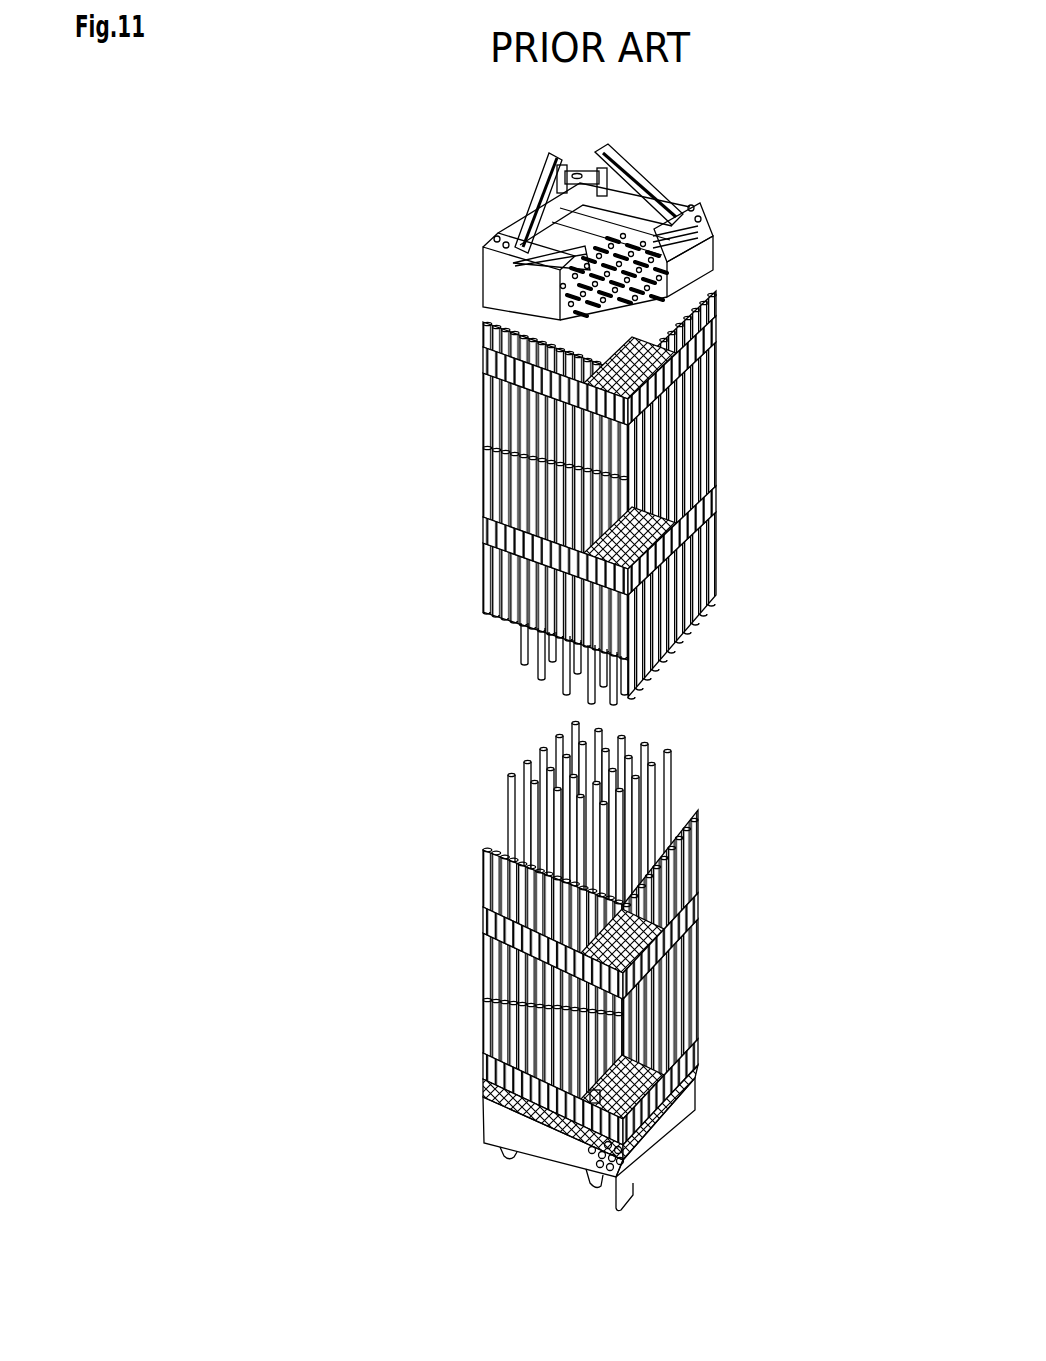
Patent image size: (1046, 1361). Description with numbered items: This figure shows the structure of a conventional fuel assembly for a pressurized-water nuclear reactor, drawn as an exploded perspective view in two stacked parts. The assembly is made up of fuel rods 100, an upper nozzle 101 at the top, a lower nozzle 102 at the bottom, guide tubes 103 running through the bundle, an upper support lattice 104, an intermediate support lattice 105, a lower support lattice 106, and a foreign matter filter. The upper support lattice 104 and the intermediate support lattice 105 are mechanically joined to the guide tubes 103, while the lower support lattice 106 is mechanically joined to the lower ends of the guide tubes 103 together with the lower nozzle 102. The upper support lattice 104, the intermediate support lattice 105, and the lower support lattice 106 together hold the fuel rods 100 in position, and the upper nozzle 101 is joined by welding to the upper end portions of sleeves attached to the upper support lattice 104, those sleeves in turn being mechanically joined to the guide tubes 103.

The fuel rods 100 is at (487, 422).
The upper nozzle 101 is at (493, 272).
The lower nozzle 102 is at (505, 1137).
The guide tubes 103 is at (523, 778).
The upper support lattice 104 is at (485, 360).
The intermediate support lattice 105 is at (485, 533).
The lower support lattice 106 is at (485, 1075).